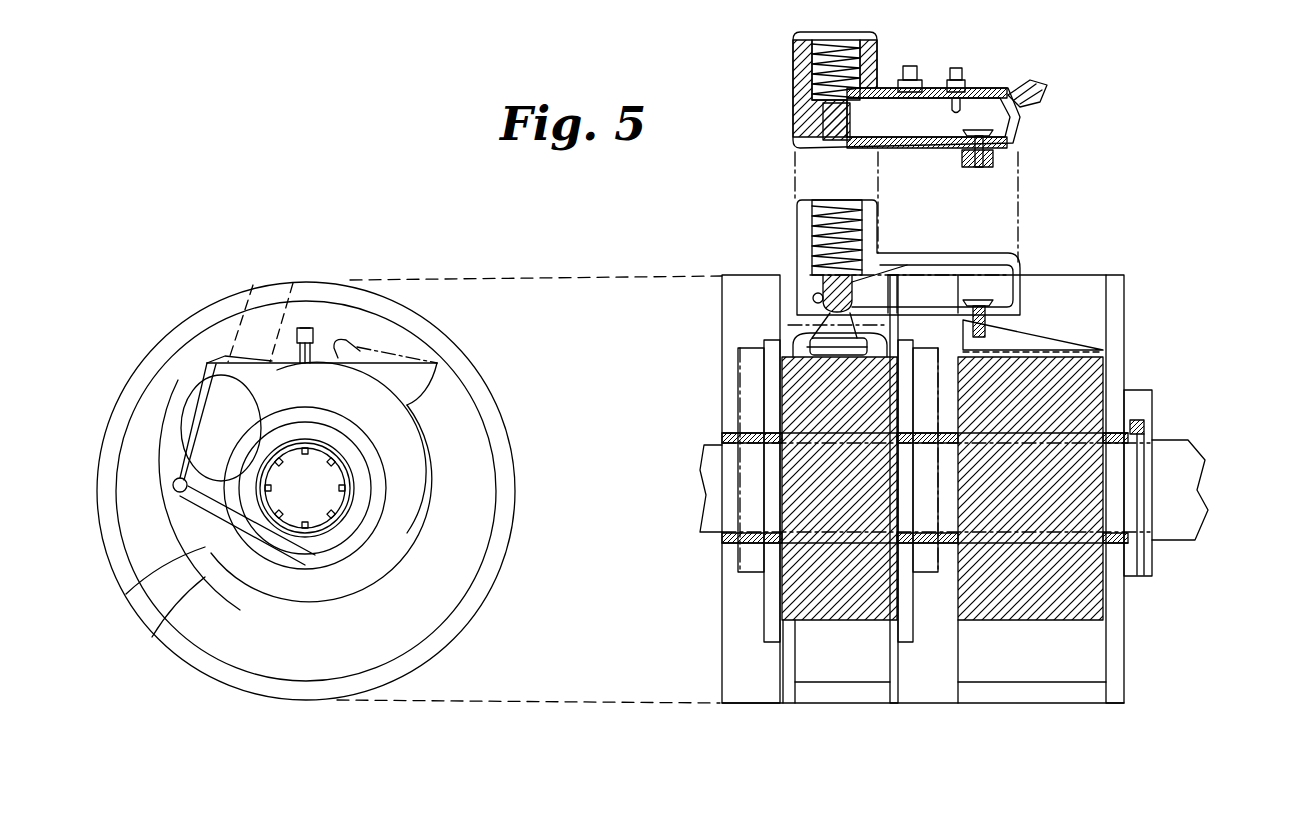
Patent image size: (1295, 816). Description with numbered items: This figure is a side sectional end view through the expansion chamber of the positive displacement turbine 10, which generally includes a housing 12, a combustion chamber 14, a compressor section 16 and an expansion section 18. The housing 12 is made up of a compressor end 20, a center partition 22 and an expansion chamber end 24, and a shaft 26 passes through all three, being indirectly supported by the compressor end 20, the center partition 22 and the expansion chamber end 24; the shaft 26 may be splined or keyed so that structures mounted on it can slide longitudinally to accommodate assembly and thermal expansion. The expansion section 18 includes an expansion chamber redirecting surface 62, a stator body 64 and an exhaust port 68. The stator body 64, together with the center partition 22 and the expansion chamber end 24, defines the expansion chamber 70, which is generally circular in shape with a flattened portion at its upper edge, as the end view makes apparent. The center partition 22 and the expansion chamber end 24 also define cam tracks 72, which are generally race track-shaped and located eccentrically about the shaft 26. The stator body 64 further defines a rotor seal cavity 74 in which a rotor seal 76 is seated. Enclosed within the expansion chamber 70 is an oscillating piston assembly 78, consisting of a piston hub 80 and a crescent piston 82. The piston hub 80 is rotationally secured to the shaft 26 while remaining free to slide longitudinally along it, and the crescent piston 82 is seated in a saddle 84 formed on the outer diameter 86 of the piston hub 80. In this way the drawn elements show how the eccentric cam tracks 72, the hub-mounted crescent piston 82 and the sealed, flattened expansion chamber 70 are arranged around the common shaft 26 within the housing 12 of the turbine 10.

The positive displacement turbine 10 is at (1124, 242).
The housing 12 is at (1122, 272).
The combustion chamber 14 is at (998, 88).
The compressor section 16 is at (1062, 710).
The expansion section 18 is at (842, 705).
The compressor end 20 is at (1130, 640).
The center partition 22 is at (925, 705).
The expansion chamber end 24 is at (783, 678).
The shaft 26 is at (337, 500).
The expansion chamber redirecting surface 62 is at (353, 350).
The stator body 64 is at (469, 360).
The exhaust port 68 is at (280, 275).
The expansion chamber 70 is at (440, 582).
The cam tracks 72 is at (280, 557).
The rotor seal cavity 74 is at (311, 328).
The rotor seal 76 is at (298, 328).
The oscillating piston assembly 78 is at (203, 563).
The piston hub 80 is at (313, 593).
The crescent piston 82 is at (200, 380).
The saddle 84 is at (128, 592).
The outer diameter 86 is at (437, 363).